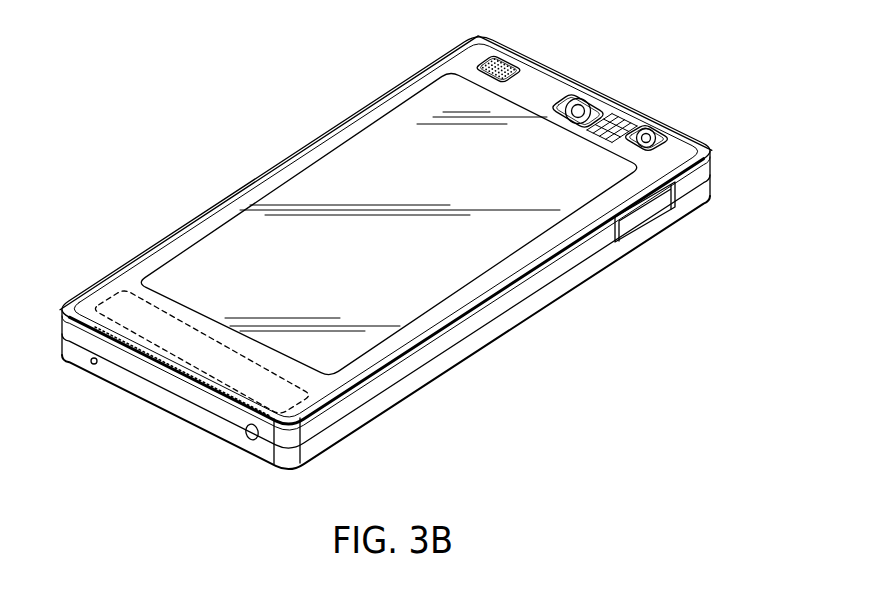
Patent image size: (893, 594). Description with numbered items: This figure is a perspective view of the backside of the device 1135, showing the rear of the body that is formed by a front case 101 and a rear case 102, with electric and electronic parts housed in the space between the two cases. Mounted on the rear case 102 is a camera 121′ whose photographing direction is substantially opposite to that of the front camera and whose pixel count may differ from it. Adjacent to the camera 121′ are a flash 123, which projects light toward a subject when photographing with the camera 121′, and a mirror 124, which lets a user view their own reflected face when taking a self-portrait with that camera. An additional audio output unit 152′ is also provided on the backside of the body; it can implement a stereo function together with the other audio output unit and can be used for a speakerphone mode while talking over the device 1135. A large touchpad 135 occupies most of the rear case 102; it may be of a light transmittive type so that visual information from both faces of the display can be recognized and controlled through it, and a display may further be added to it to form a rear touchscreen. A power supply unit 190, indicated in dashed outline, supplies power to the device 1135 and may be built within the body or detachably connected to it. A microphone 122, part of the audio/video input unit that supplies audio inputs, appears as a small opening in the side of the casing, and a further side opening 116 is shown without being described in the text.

The device 1135 is at (302, 79).
The touchpad 135 is at (317, 182).
The additional audio output unit 152′ is at (508, 62).
The camera 121′ is at (583, 110).
The flash 123 is at (618, 120).
The mirror 124 is at (647, 138).
The rear case 102 is at (705, 163).
The front case 101 is at (705, 188).
The power supply unit 190 is at (97, 288).
The microphone 122 is at (92, 364).
The audio jack 116 is at (249, 439).